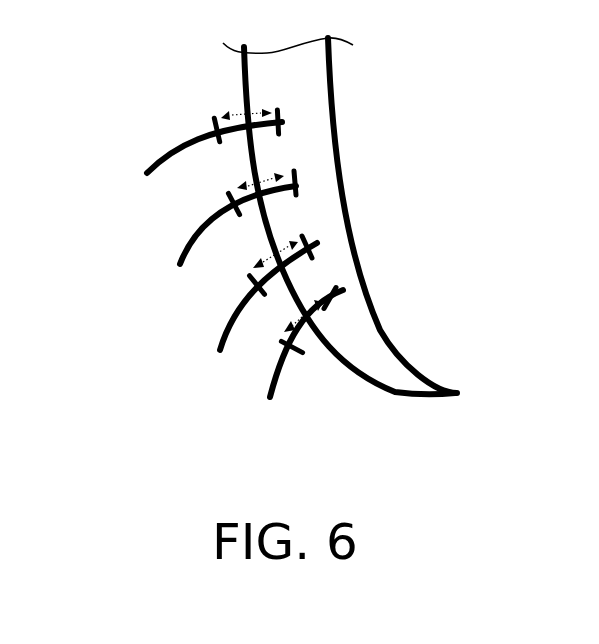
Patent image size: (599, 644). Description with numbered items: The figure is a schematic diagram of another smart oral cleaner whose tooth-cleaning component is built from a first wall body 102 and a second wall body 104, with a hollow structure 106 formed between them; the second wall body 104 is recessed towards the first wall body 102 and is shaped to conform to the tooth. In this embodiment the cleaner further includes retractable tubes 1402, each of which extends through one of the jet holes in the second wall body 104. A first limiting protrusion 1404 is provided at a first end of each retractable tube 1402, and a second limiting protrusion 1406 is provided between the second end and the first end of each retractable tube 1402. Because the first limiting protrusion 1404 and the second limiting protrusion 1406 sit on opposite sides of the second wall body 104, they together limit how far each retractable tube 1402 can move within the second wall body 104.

The first wall body 102 is at (287, 212).
The second wall body 104 is at (243, 88).
The hollow structure 106 is at (300, 123).
The retractable tubes 1402 is at (230, 313).
The first limiting protrusion 1404 is at (298, 187).
The second limiting protrusion 1406 is at (208, 126).